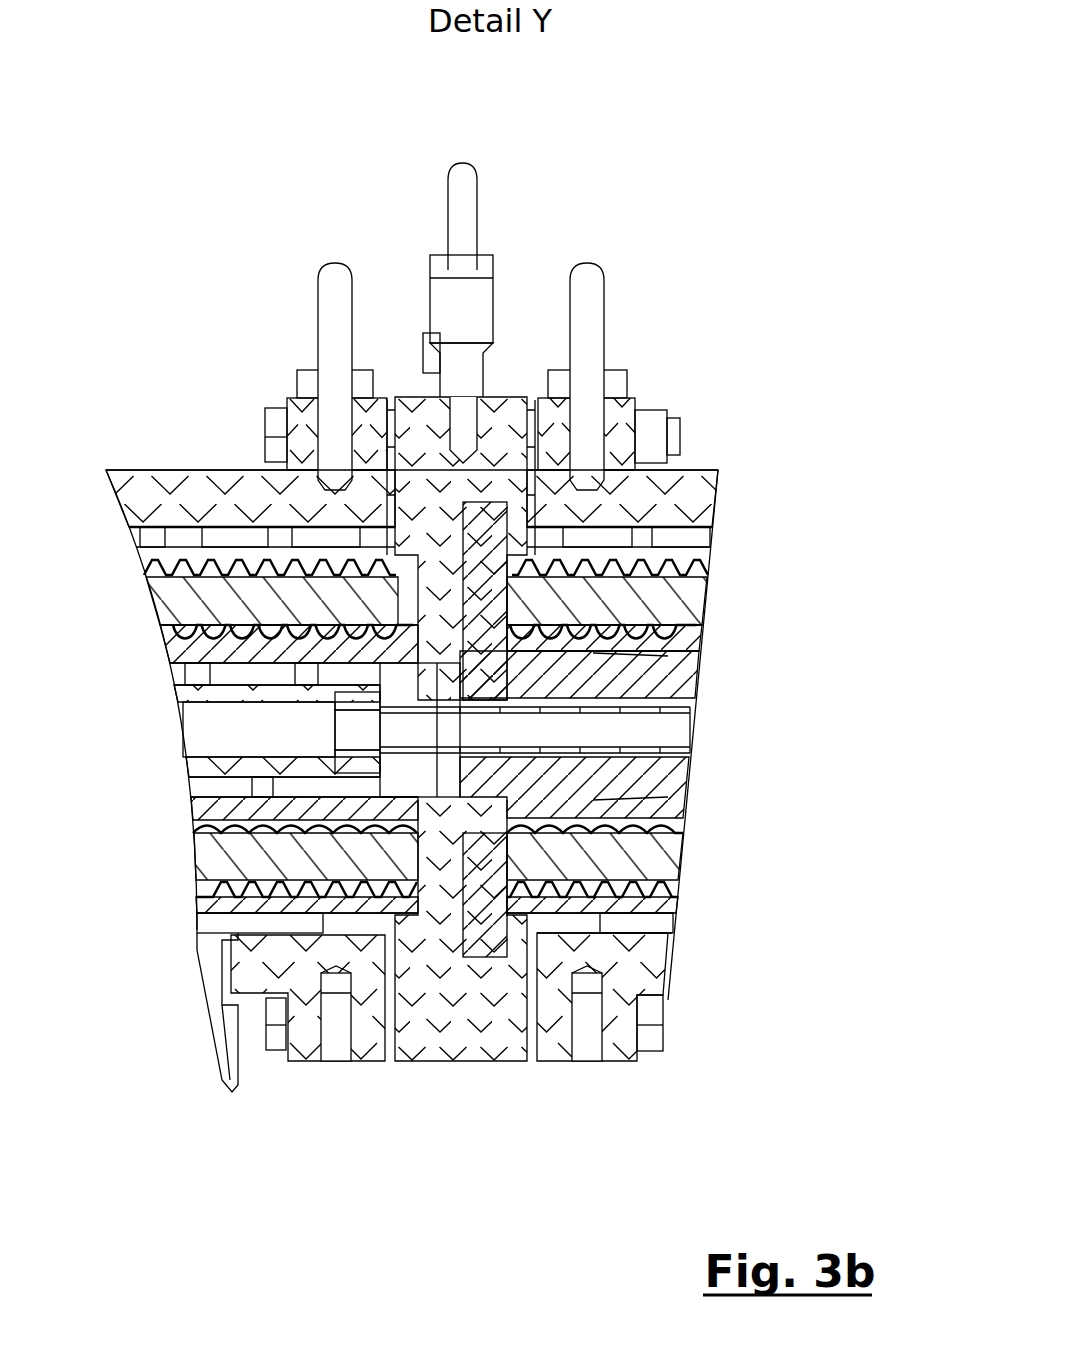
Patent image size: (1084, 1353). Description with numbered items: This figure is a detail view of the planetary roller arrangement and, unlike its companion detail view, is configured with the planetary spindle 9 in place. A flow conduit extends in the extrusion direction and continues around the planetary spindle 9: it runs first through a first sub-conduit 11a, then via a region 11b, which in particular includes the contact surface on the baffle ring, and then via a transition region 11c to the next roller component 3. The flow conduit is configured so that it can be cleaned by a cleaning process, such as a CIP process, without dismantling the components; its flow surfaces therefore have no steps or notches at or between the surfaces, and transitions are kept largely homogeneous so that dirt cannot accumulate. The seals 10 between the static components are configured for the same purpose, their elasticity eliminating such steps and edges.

The roller component 3 is at (152, 497).
The planetary spindle 9 is at (193, 557).
The seal 10 is at (420, 400).
The first sub-conduit 11a is at (265, 545).
The region 11b is at (575, 553).
The transition region 11c is at (413, 570).